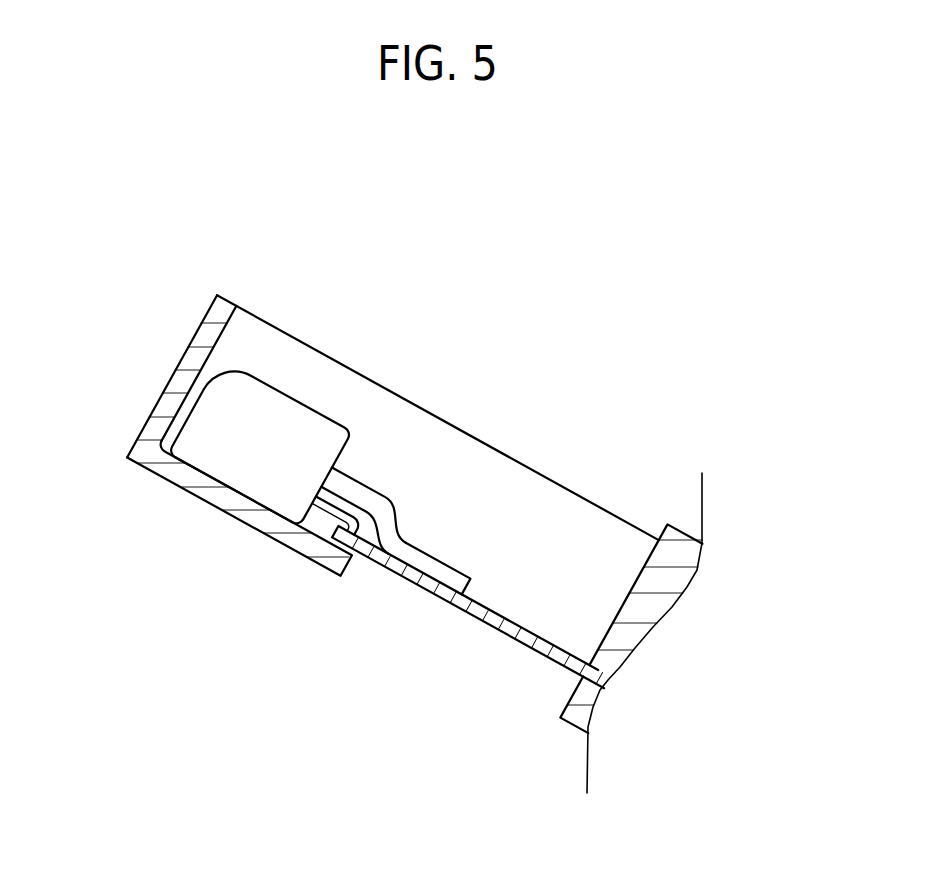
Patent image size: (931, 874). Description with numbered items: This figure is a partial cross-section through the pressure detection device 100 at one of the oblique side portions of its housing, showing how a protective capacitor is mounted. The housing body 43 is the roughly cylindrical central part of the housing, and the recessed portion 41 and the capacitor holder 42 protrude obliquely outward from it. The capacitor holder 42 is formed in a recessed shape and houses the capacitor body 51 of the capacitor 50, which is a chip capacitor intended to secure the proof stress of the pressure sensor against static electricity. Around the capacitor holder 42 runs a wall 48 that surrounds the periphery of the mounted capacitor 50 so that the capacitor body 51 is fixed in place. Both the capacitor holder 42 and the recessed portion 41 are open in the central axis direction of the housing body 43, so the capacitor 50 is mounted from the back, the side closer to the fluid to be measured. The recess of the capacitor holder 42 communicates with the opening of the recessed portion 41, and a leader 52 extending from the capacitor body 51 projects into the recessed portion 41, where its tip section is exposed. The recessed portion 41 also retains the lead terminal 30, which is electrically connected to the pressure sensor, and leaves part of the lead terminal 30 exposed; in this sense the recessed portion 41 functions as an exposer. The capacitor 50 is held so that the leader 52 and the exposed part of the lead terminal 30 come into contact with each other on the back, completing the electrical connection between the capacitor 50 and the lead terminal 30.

The pressure detection device 100 is at (697, 410).
The lead terminal 30 is at (447, 595).
The recessed portion 41 is at (558, 497).
The capacitor holder 42 is at (333, 385).
The housing body 43 is at (573, 715).
The wall 48 is at (180, 383).
The capacitor 50 is at (260, 345).
The capacitor body 51 is at (272, 400).
The leader 52 is at (430, 563).